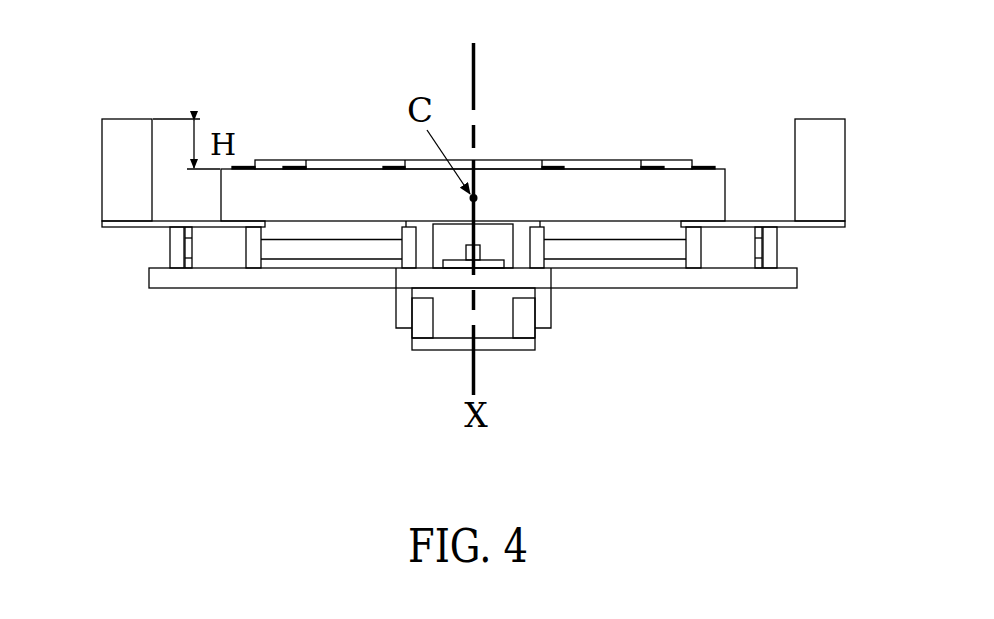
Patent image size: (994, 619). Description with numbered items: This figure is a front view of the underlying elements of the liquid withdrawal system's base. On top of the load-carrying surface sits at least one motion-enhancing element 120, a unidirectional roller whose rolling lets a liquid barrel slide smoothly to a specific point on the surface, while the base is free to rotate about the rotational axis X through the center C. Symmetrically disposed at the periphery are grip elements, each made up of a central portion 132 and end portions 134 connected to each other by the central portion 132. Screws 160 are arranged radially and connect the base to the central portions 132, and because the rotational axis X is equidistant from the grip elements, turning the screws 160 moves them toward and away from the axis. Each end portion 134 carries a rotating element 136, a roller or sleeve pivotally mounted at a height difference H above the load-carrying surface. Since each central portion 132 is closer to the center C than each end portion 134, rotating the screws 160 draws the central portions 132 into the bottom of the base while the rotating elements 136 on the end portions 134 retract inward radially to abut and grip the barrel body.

The motion-enhancing element 120 is at (600, 168).
The central portion 132 is at (244, 223).
The end portion 134 is at (127, 224).
The rotating element 136 is at (132, 128).
The screw 160 is at (315, 249).